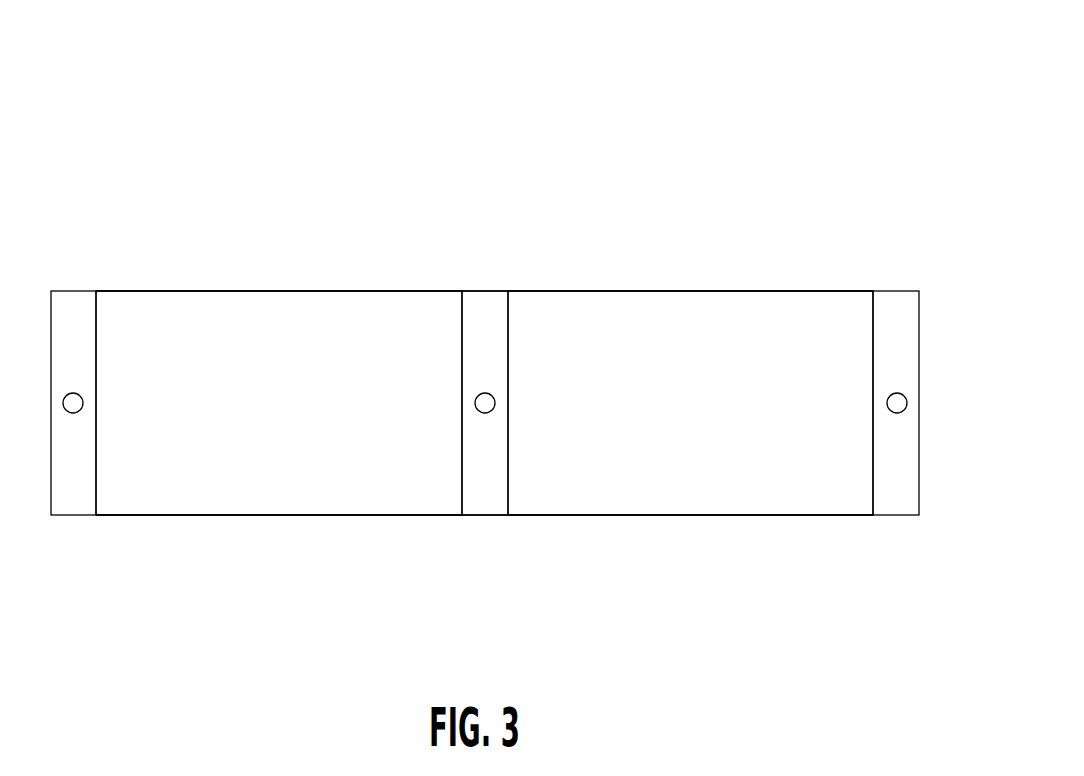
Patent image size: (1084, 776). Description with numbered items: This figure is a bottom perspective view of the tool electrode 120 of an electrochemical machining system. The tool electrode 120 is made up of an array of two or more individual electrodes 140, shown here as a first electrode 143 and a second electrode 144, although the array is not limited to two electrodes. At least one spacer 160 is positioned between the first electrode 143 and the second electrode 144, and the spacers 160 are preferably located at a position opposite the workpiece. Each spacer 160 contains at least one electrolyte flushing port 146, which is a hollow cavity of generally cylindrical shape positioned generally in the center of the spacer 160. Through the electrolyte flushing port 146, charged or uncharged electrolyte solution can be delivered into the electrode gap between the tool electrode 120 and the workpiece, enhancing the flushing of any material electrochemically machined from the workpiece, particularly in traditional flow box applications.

The tool electrode 120 is at (912, 206).
The array of two or more individual electrodes 140 is at (396, 271).
The spacer 160 is at (897, 281).
The first electrode 143 is at (296, 416).
The second electrode 144 is at (710, 416).
The electrolyte flushing port 146 is at (897, 416).